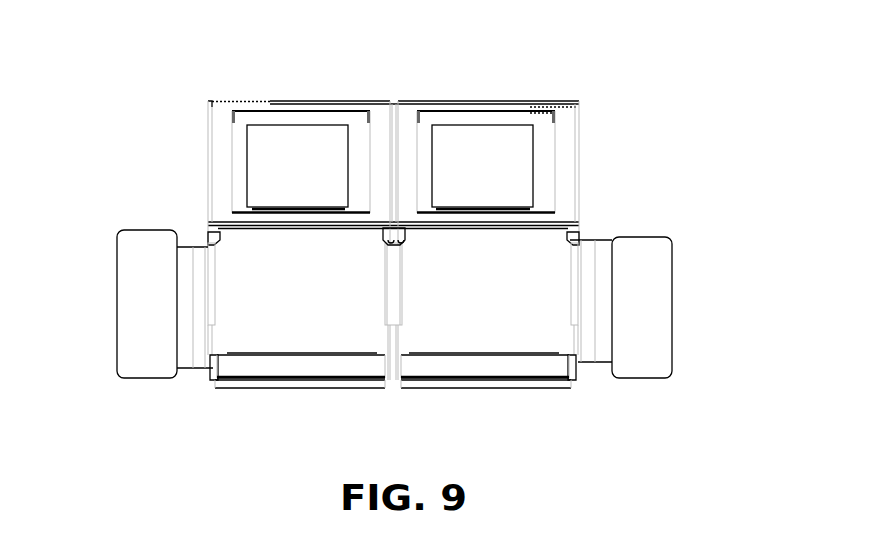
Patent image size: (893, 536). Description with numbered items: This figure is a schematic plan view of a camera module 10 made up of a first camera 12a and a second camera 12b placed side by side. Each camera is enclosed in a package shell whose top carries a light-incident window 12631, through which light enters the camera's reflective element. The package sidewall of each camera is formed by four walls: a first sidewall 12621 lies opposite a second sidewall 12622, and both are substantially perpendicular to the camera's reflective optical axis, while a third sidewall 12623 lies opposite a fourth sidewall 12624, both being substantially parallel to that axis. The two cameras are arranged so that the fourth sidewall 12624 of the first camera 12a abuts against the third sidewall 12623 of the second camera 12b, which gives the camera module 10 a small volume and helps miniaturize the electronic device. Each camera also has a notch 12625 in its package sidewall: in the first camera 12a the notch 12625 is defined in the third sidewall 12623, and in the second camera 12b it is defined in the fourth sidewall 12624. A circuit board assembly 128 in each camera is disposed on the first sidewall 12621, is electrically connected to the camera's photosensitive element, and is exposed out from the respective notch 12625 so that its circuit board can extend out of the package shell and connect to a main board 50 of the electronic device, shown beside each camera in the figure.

The camera module 10 is at (212, 8).
The first camera 12a is at (303, 59).
The second camera 12b is at (501, 65).
The second sidewall 12622 is at (348, 101).
The light-incident window 12631 is at (252, 118).
The third sidewall 12623 is at (208, 158).
The fourth sidewall 12624 is at (578, 152).
The notch 12625 is at (208, 266).
The circuit board assembly 128 is at (190, 362).
The main board 50 is at (133, 310).
The first sidewall 12621 is at (300, 388).